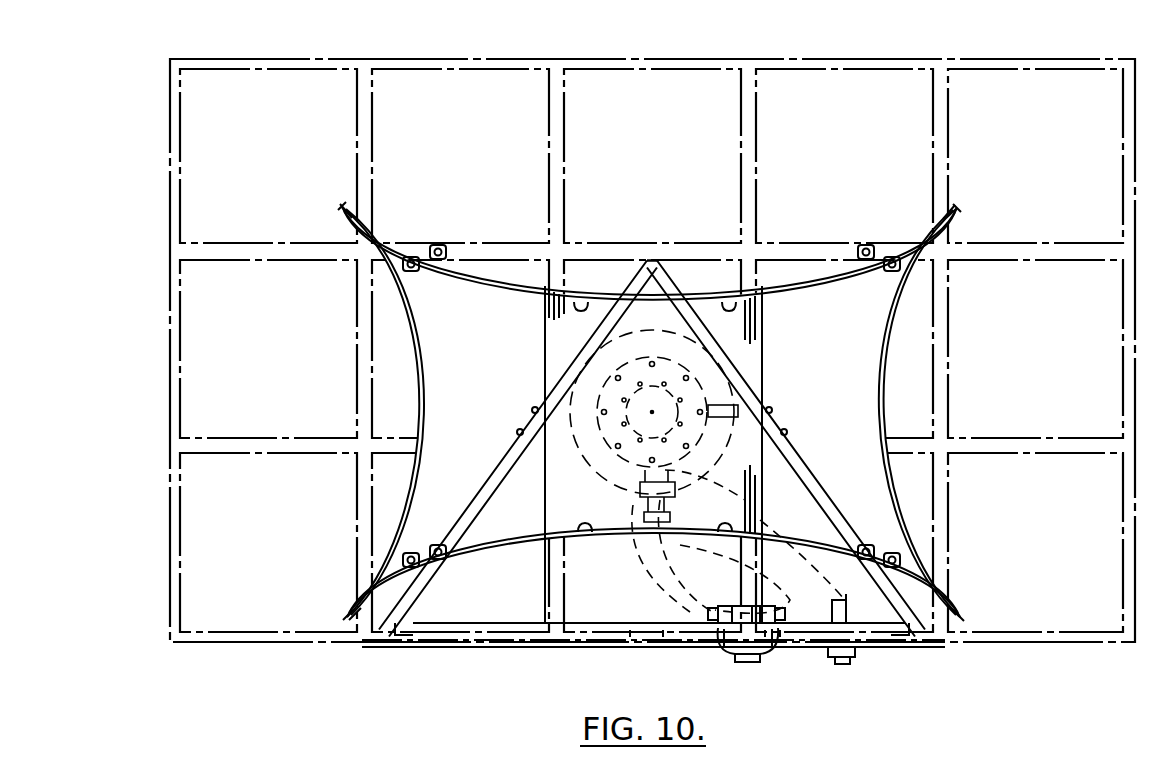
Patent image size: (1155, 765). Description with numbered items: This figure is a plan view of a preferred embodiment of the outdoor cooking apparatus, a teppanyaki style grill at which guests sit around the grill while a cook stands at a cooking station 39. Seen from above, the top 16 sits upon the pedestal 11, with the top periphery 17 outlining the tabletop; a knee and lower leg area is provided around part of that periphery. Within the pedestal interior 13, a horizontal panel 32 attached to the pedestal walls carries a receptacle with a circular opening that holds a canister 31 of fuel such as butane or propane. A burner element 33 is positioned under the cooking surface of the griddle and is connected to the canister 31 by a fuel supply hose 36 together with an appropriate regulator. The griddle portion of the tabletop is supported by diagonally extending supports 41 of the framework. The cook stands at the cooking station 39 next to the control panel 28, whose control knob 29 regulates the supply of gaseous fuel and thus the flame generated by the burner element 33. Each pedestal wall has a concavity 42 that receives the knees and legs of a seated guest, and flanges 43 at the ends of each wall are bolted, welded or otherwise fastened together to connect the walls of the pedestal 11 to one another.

The pedestal 11 is at (823, 280).
The pedestal interior 13 is at (527, 318).
The top 16 is at (1013, 60).
The top periphery 17 is at (252, 643).
The control panel 28 is at (645, 650).
The control knob 29 is at (740, 670).
The canister 31 is at (542, 486).
The horizontal panel 32 is at (568, 500).
The burner element 33 is at (630, 300).
The fuel supply hose 36 is at (655, 572).
The cooking station 39 is at (545, 668).
The diagonally extending supports 41 is at (480, 490).
The concavity 42 is at (532, 280).
The flanges 43 is at (364, 226).